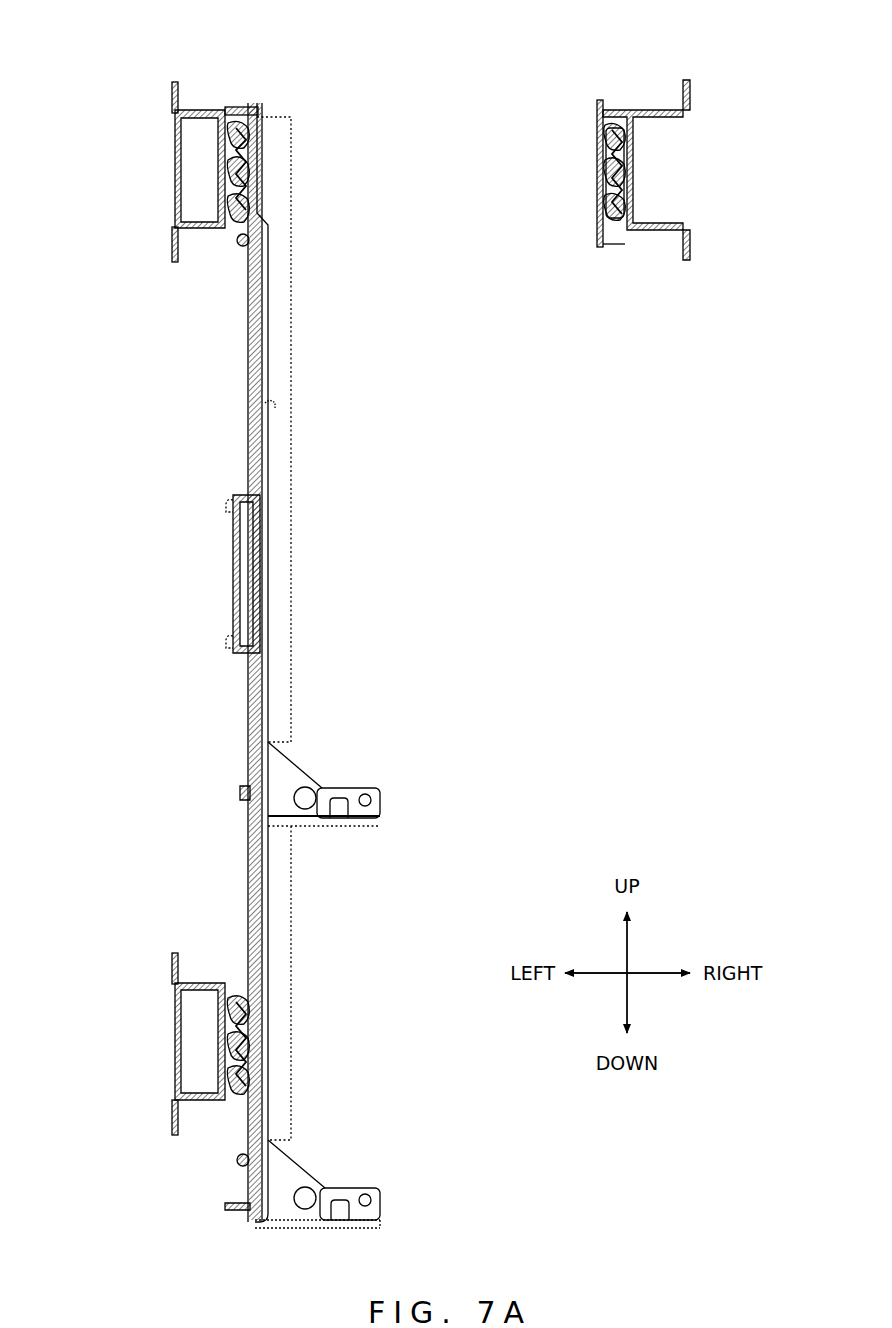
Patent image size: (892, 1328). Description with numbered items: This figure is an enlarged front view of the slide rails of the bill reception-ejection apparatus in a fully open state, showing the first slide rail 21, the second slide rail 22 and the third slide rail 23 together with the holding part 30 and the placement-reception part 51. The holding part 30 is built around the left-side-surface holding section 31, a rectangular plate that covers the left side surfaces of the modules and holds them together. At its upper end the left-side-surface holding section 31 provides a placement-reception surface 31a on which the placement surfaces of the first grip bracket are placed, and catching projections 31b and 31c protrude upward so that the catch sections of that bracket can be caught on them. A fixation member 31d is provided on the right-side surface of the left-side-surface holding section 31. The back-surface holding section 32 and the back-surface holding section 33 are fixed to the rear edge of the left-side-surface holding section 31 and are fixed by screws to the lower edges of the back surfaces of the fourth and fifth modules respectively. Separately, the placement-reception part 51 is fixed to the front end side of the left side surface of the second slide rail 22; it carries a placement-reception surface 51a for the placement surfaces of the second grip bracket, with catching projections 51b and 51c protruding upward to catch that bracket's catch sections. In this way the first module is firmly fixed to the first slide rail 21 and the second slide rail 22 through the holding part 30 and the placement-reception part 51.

The first slide rail 21 is at (178, 172).
The second slide rail 22 is at (692, 240).
The third slide rail 23 is at (178, 1038).
The holding part 30 is at (246, 437).
The left-side-surface holding section 31 is at (248, 360).
The placement-reception surface 31a is at (237, 107).
The catching projection 31b is at (252, 106).
The catching projection 31c is at (277, 137).
The fixation member 31d is at (265, 348).
The back-surface holding section 32 is at (381, 802).
The back-surface holding section 33 is at (381, 1202).
The placement-reception part 51 is at (612, 250).
The placement-reception surface 51a is at (614, 108).
The catching projection 51b is at (603, 108).
The catching projection 51c is at (590, 122).